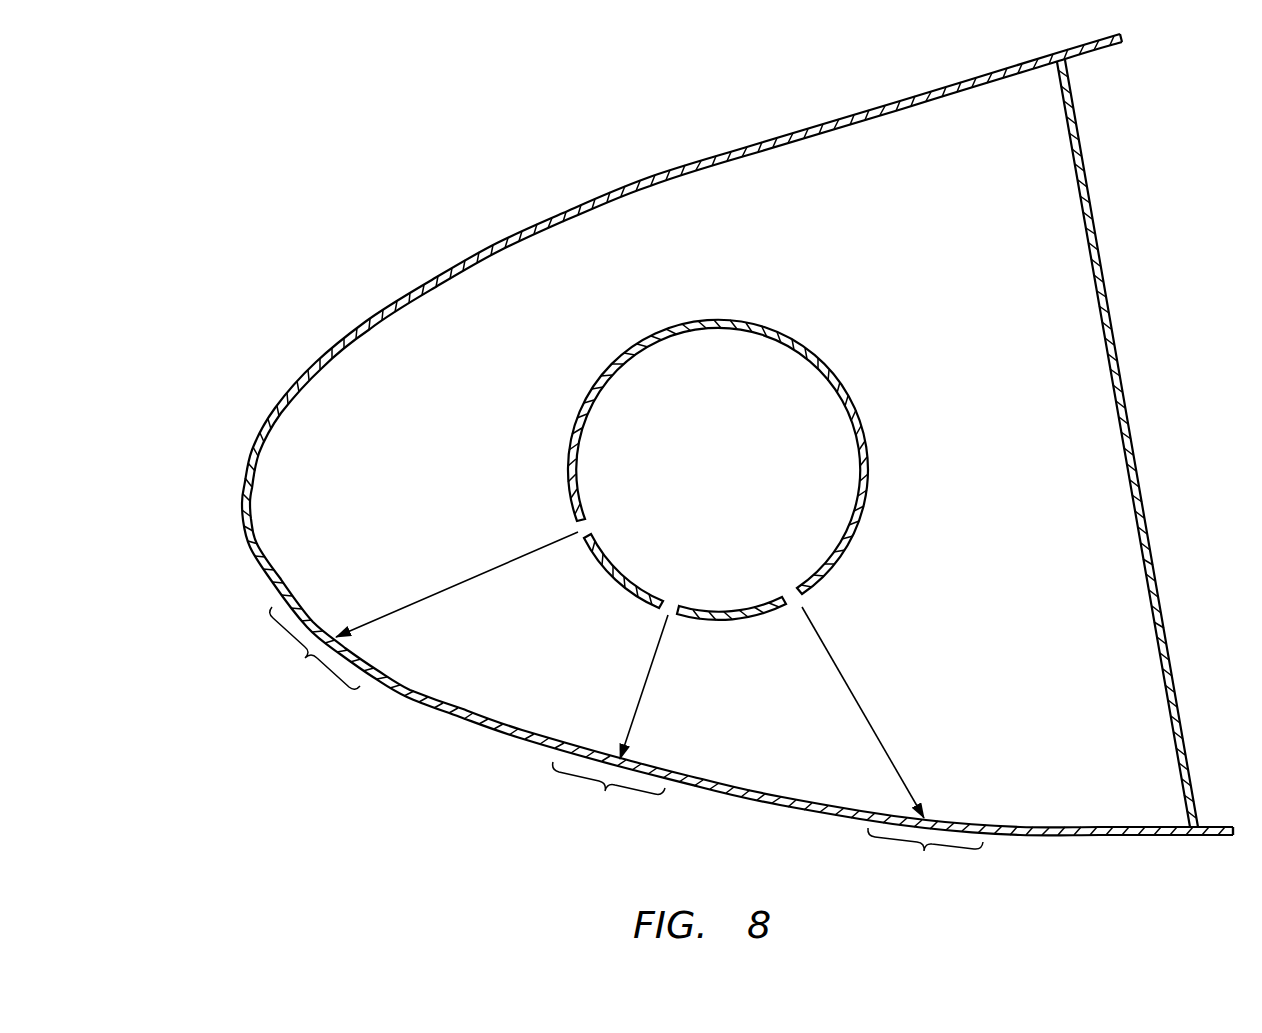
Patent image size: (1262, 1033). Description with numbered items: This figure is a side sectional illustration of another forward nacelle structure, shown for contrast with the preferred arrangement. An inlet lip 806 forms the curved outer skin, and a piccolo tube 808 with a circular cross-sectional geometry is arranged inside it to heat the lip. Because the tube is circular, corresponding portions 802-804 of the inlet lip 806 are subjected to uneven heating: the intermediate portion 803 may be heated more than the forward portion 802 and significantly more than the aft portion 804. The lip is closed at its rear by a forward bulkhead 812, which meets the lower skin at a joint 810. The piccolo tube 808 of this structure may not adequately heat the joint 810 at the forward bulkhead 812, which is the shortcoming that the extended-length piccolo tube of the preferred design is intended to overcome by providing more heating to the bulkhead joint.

The forward portion 802 is at (416, 612).
The intermediate portion 803 is at (610, 723).
The aft portion 804 is at (892, 748).
The inlet lip 806 is at (231, 518).
The piccolo tube 808 is at (840, 370).
The joint 810 is at (1208, 849).
The forward bulkhead 812 is at (1124, 375).